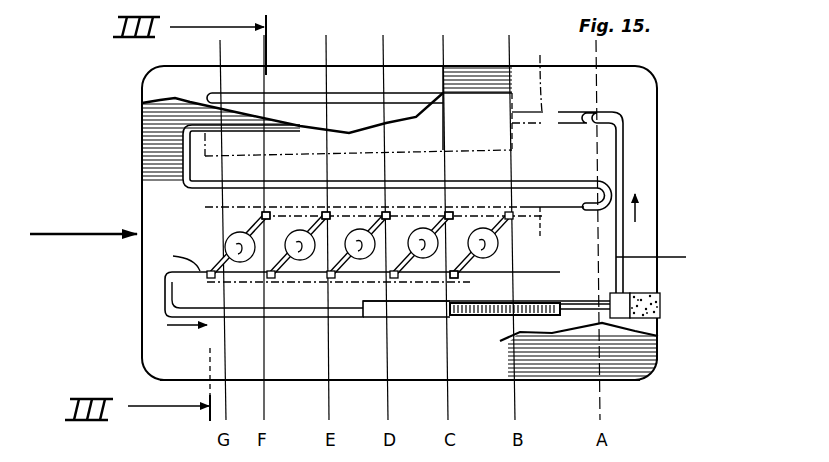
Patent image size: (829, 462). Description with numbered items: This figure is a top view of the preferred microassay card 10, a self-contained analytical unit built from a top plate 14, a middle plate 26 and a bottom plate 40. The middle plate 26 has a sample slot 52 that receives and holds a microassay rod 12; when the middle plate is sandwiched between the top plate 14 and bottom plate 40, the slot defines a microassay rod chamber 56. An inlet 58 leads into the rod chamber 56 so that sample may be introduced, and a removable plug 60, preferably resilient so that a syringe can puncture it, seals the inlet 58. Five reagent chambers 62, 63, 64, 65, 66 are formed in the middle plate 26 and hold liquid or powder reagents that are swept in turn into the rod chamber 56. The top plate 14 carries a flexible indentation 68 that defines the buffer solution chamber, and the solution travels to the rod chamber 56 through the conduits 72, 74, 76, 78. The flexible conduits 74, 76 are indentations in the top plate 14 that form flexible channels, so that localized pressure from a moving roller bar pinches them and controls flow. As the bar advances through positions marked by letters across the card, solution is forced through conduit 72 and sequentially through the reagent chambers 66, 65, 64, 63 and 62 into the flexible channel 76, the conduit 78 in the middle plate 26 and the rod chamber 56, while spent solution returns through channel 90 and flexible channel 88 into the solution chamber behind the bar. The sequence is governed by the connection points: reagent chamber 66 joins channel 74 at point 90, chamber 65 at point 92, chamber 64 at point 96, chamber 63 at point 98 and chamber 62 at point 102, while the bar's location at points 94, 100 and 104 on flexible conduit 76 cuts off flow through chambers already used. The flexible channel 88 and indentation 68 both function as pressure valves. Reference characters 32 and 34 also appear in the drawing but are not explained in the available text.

The microassay card 10 is at (127, 147).
The microassay rod 12 is at (476, 318).
The top plate 14 is at (167, 82).
The middle plate 26 is at (176, 351).
The housing end wall 32 is at (657, 90).
The supply passage 34 is at (142, 187).
The bottom plate 40 is at (657, 366).
The sample slot 52 is at (394, 316).
The microassay rod chamber 56 is at (417, 309).
The inlet 58 is at (582, 316).
The removable plug 60 is at (660, 307).
The reagent chamber 62 is at (230, 237).
The reagent chamber 63 is at (307, 258).
The reagent chamber 64 is at (364, 258).
The reagent chamber 65 is at (428, 258).
The reagent chamber 66 is at (497, 250).
The flexible indentation 68 is at (296, 110).
The conduit 72 is at (575, 174).
The flexible conduit 74 is at (559, 227).
The flexible conduit 76 is at (170, 254).
The conduit 78 is at (187, 308).
The flexible channel 88 is at (528, 78).
The channel 90 is at (511, 213).
The connection point 92 is at (452, 213).
The point on flexible conduit 94 is at (458, 278).
The connection point 96 is at (390, 213).
The connection point 98 is at (330, 213).
The connection point 100 is at (343, 283).
The connection point 102 is at (268, 212).
The connection point 104 is at (281, 283).